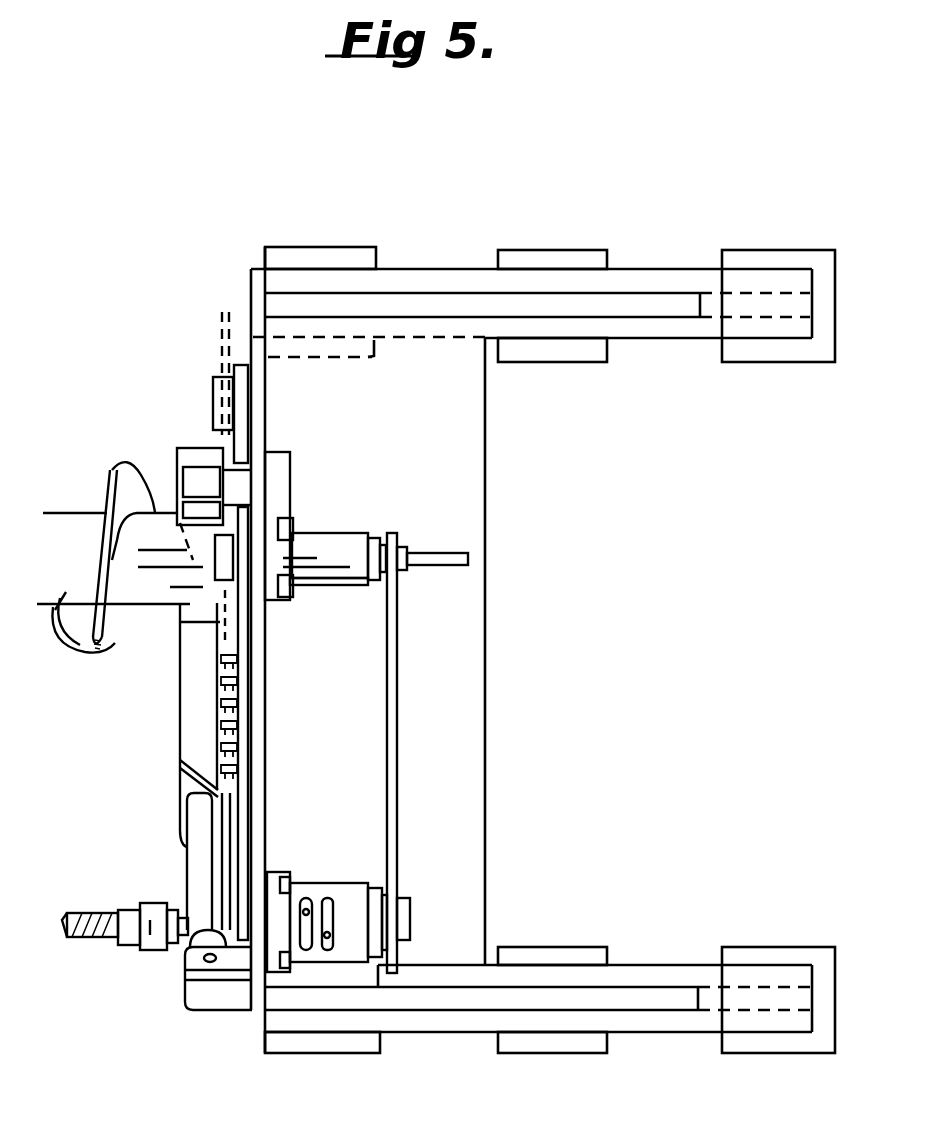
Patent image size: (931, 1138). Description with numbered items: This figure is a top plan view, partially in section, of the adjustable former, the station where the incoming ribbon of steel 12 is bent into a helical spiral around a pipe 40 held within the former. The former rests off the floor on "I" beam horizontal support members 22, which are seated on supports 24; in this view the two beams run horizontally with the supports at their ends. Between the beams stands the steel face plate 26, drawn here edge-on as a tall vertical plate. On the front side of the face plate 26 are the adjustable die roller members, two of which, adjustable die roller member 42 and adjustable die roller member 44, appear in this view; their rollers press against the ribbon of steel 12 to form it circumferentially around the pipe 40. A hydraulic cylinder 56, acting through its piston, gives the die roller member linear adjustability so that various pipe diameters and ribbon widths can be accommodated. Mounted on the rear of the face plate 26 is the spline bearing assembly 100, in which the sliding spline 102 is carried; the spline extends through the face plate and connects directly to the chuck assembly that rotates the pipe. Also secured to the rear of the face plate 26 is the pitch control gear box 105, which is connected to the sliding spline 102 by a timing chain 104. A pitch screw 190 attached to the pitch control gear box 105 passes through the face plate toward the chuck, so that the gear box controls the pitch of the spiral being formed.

The ribbon of steel 12 is at (107, 637).
The "I" beam horizontal support members 22 is at (650, 280).
The supports 24 is at (345, 260).
The face plate 26 is at (260, 1022).
The pipe 40 is at (103, 576).
The adjustable die roller member 42 is at (178, 438).
The adjustable die roller member 44 is at (183, 825).
The hydraulic cylinder 56 is at (193, 872).
The spline bearing assembly 100 is at (342, 540).
The sliding spline 102 is at (478, 528).
The timing chain 104 is at (392, 722).
The pitch control gear box 105 is at (373, 870).
The pitch screw 190 is at (107, 943).